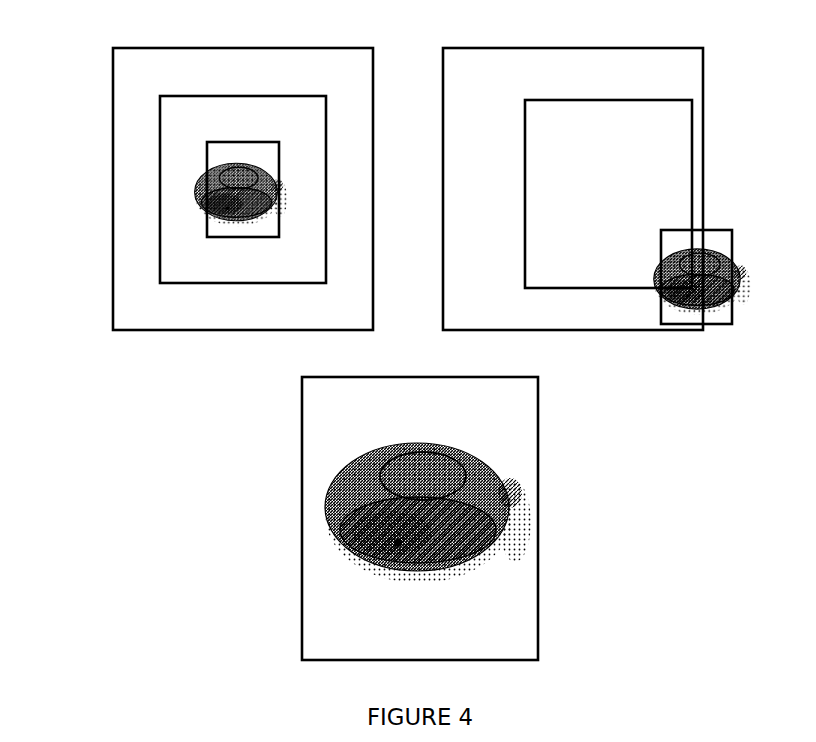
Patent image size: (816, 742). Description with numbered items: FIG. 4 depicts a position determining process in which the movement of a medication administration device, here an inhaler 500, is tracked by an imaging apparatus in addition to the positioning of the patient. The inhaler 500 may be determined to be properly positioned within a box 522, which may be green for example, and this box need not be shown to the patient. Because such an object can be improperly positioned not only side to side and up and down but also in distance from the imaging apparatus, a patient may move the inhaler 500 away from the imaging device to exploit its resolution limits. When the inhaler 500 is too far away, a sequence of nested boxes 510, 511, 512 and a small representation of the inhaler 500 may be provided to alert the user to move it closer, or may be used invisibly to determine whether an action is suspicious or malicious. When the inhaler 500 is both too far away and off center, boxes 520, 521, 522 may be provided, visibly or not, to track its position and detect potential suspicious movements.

The inhaler 500 is at (220, 157).
The box 510 is at (113, 142).
The box 511 is at (160, 188).
The box 512 is at (207, 235).
The box 520 is at (703, 70).
The box 521 is at (632, 100).
The box 522 is at (731, 308).